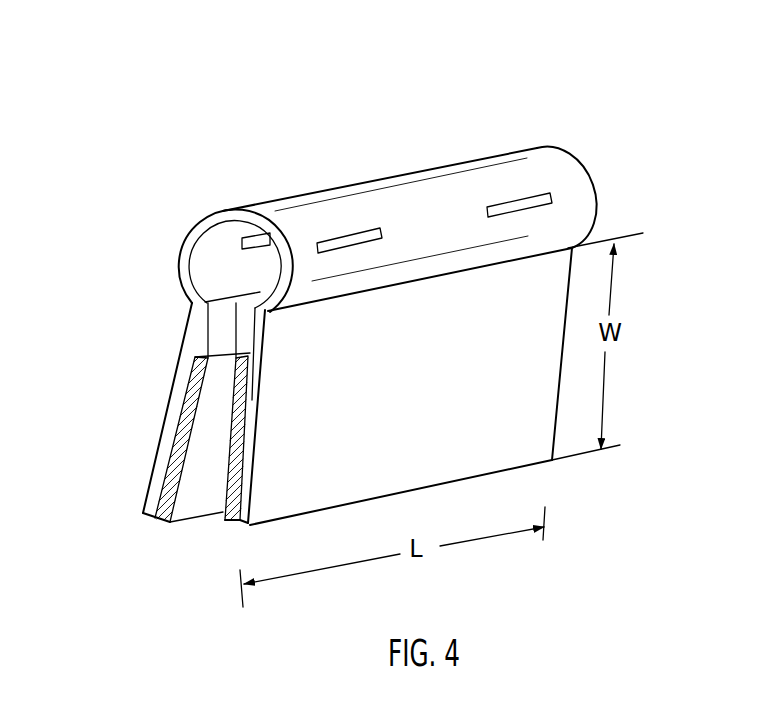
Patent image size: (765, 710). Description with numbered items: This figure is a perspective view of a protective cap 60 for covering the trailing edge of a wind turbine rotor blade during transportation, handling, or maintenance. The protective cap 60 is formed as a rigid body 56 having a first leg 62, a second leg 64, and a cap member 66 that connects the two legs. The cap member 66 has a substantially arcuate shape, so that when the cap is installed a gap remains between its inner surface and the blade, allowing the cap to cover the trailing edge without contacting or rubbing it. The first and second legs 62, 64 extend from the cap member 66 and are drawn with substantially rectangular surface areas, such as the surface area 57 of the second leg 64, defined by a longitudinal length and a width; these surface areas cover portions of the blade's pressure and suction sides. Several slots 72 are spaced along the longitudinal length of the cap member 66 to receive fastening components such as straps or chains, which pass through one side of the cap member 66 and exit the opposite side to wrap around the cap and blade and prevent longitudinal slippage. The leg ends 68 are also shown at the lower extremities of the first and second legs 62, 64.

The protective cap 60 is at (628, 122).
The cap member 66 is at (187, 233).
The slots 72 is at (510, 203).
The first leg 62 is at (158, 448).
The second leg 64 is at (250, 465).
The leg ends 68 is at (227, 531).
The surface area 57 is at (533, 347).
The rigid body 56 is at (531, 433).